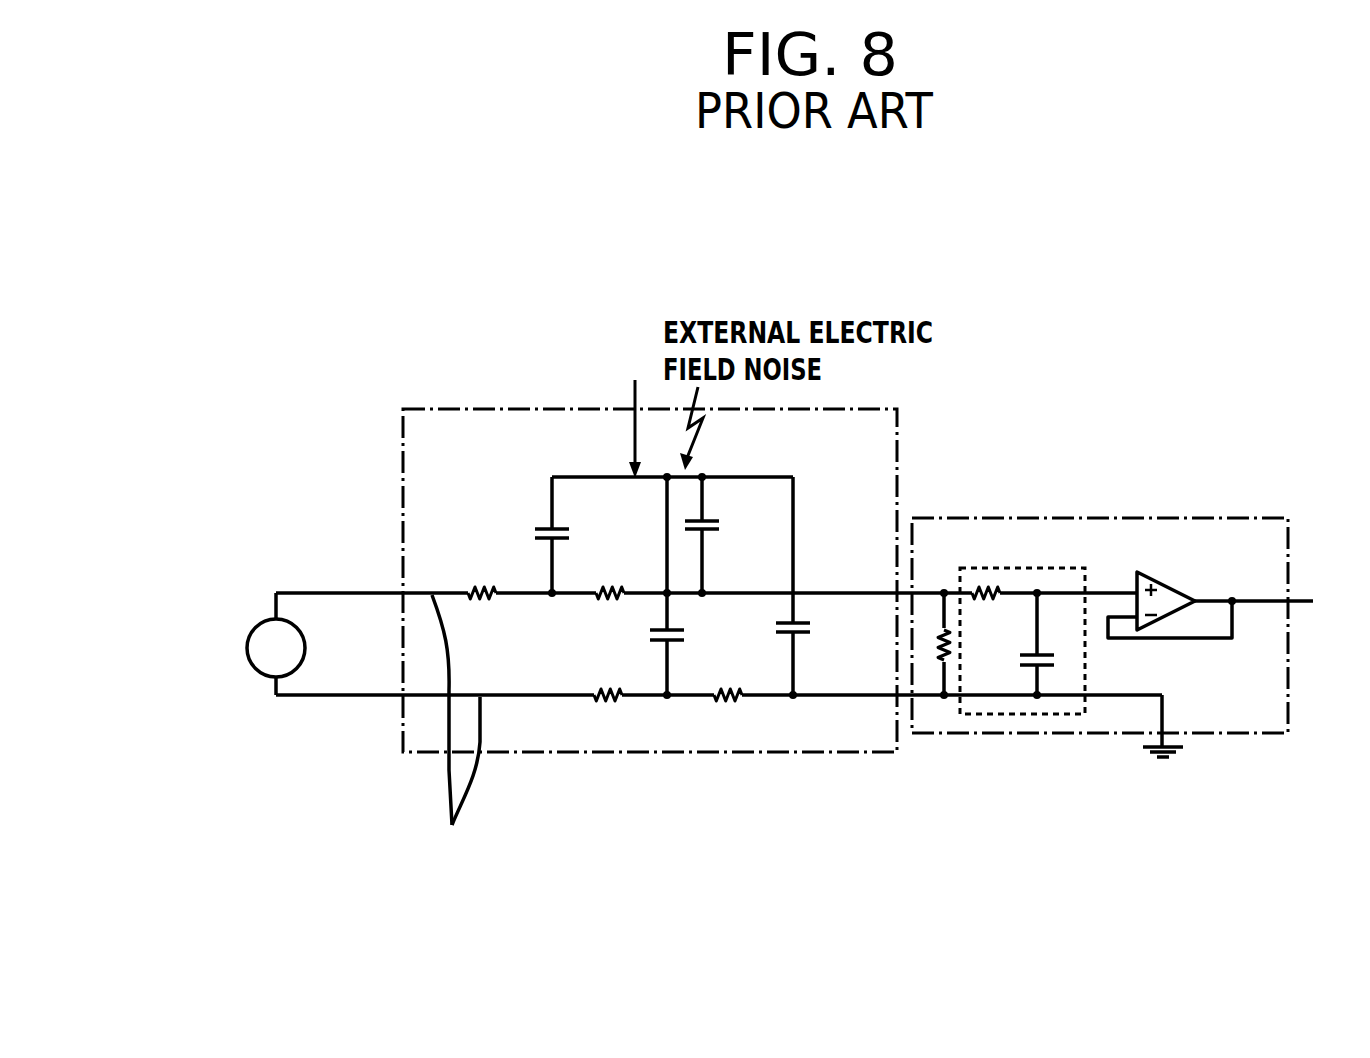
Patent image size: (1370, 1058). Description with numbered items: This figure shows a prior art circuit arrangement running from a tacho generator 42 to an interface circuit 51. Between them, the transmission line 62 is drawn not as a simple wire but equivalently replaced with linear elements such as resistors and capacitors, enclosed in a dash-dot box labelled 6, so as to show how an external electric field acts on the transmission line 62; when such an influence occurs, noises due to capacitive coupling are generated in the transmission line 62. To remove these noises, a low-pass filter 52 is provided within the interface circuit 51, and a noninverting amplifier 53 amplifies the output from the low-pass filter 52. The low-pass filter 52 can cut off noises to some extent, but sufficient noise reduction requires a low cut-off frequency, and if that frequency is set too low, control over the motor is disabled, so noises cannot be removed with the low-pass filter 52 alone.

The tacho generator 42 is at (245, 655).
The transmission line 62 is at (458, 739).
The cable network / signal line 6 is at (740, 752).
The interface circuit 51 is at (1066, 520).
The low-pass filter 52 is at (996, 566).
The noninverting amplifier 53 is at (1175, 615).